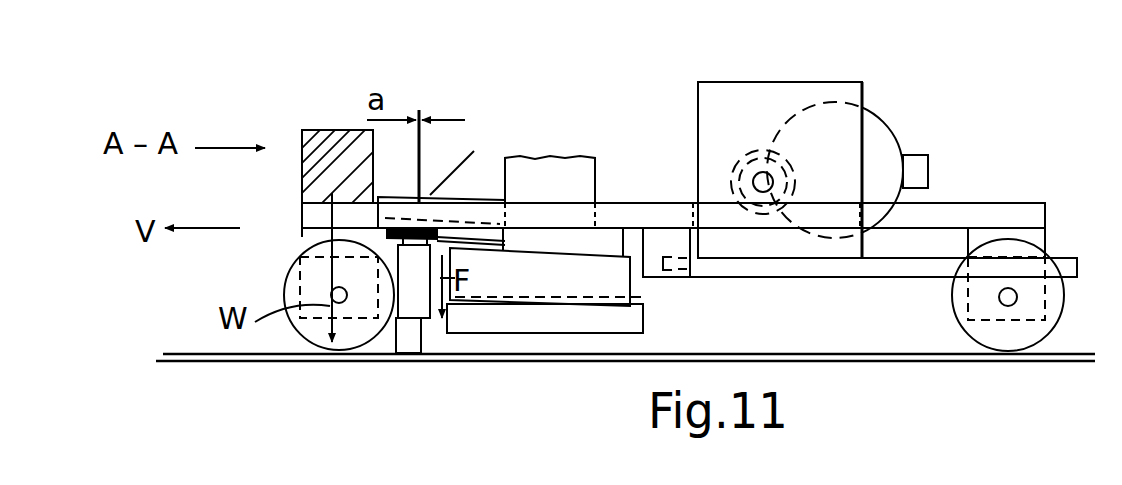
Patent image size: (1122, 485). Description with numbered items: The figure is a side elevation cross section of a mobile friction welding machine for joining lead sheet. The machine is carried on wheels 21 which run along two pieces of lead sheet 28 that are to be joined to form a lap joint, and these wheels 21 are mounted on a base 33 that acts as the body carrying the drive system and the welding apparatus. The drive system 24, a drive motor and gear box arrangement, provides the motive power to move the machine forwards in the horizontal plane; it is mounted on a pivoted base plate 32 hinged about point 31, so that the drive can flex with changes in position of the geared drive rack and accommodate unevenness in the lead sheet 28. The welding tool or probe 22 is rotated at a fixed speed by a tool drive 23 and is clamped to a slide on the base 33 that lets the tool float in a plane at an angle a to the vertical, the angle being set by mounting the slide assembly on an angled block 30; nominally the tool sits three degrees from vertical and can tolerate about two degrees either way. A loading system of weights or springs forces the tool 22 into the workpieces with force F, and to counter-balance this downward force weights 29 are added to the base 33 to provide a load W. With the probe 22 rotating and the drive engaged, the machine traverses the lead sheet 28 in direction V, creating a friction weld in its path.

The wheels 21 is at (283, 282).
The welding tool 22 is at (423, 335).
The grinding stone 23 is at (502, 145).
The drive system 24 is at (820, 142).
The lead sheet 28 is at (805, 362).
The weights 29 is at (302, 126).
The angled block 30 is at (538, 320).
The hinge point 31 is at (680, 278).
The pivoted base plate 32 is at (892, 267).
The base 33 is at (1045, 203).